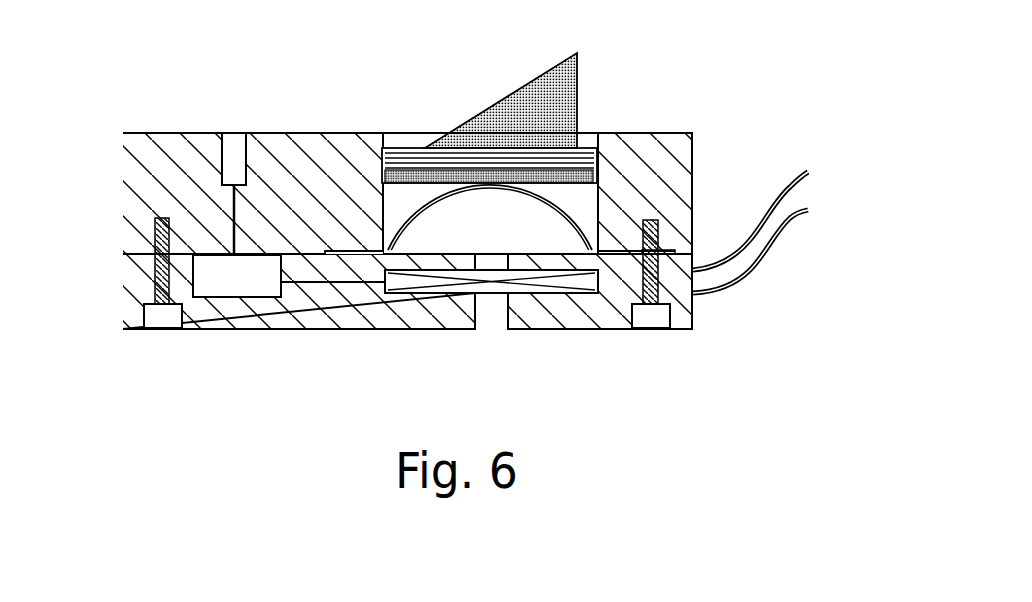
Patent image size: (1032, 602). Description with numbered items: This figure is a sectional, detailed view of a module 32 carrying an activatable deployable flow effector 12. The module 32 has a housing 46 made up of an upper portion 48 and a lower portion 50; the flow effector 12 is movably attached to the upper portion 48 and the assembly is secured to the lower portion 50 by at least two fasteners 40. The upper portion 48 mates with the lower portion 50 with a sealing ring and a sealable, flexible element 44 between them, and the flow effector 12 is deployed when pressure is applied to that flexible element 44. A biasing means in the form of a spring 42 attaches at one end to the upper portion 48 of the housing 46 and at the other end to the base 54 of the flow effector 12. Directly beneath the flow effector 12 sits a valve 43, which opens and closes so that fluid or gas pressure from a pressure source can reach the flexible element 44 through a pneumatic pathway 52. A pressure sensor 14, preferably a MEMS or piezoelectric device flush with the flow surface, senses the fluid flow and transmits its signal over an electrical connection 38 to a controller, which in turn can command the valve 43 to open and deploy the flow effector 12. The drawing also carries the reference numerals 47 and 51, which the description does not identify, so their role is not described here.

The flow effector 12 is at (508, 97).
The pressure sensor 14 is at (230, 133).
The module 32 is at (121, 198).
The electrical connection 38 is at (234, 223).
The fasteners 40 is at (156, 329).
The biasing means (spring) 42 is at (239, 298).
The valve 43 is at (552, 300).
The flexible element 44 is at (578, 233).
The housing 46 is at (176, 158).
The sensor stack 47 is at (588, 152).
The upper portion of the housing 48 is at (343, 148).
The lower portion of the housing 50 is at (397, 313).
The wire 51 is at (334, 284).
The pneumatic pathway 52 is at (810, 193).
The base of flow effector 54 is at (598, 176).